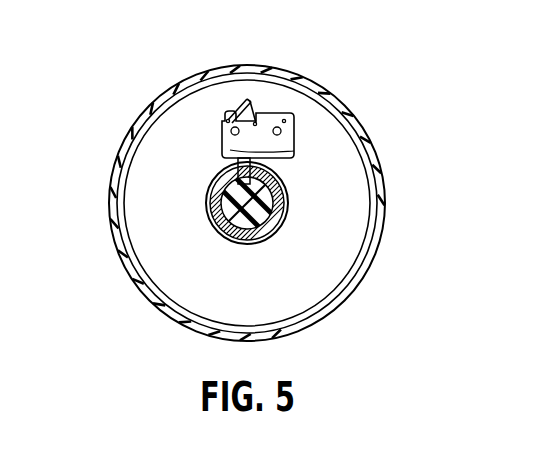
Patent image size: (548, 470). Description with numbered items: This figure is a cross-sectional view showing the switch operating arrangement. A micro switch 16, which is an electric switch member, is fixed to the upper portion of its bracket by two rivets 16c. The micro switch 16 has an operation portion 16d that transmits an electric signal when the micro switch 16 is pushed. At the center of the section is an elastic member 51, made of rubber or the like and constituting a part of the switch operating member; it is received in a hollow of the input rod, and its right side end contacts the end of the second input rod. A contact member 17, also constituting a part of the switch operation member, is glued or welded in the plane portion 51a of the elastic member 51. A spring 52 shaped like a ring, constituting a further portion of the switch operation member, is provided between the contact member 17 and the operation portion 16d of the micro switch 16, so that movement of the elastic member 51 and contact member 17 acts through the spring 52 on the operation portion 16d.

The micro switch 16 is at (294, 138).
The rivets 16c is at (272, 116).
The operation portion 16d is at (296, 152).
The contact member 17 is at (232, 160).
The elastic member 51 is at (218, 232).
The plane portion 51a is at (212, 178).
The spring 52 is at (289, 207).